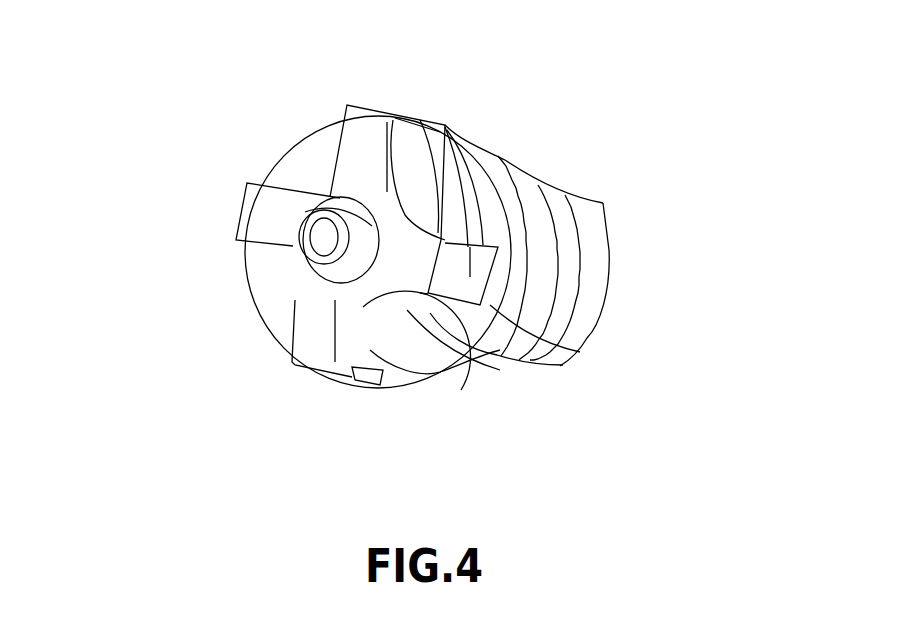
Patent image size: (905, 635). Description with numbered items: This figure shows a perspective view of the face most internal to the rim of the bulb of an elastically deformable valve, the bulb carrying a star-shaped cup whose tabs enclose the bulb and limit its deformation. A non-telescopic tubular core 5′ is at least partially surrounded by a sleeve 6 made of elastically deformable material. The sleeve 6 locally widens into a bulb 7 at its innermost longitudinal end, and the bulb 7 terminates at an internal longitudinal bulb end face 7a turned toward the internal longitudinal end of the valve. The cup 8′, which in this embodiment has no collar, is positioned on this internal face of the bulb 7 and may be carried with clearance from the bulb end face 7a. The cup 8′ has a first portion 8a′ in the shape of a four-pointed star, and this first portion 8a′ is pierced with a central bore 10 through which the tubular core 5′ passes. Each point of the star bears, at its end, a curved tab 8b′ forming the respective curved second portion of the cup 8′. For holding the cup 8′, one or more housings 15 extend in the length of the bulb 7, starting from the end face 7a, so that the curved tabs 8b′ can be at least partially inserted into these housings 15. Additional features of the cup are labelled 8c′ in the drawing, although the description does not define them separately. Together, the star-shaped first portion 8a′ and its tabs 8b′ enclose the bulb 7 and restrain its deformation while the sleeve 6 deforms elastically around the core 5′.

The central bore 10 is at (250, 178).
The cup 8′ is at (320, 143).
The housing 15 is at (398, 138).
The curved tab 8b′ is at (412, 128).
The rib 8c′ is at (445, 126).
The bulb 7 is at (490, 213).
The sleeve 6 is at (574, 190).
The first portion 8a′ is at (273, 236).
The non-telescopic tubular core 5′ is at (443, 362).
The internal longitudinal bulb end face 7a is at (473, 364).